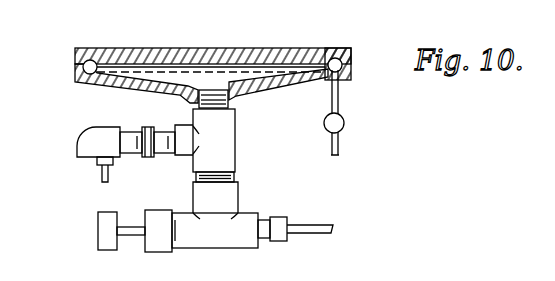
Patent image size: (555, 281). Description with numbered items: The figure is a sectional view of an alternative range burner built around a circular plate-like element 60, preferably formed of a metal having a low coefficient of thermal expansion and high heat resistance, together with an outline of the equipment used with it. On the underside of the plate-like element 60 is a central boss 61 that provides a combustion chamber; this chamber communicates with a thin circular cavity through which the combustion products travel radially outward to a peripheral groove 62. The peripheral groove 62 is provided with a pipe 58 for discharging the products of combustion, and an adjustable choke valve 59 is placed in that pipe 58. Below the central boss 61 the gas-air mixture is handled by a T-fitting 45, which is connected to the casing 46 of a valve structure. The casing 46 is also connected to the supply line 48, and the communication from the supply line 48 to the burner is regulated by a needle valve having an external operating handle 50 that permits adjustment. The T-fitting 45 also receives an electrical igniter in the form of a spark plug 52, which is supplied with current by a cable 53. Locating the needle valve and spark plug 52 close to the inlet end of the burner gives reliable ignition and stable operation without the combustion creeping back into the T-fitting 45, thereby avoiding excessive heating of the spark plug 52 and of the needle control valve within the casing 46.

The T-fitting 45 is at (236, 148).
The casing 46 is at (212, 248).
The supply line 48 is at (315, 235).
The operating handle 50 is at (98, 230).
The spark plug 52 is at (83, 128).
The cable 53 is at (102, 173).
The pipe 58 is at (343, 100).
The adjustable choke valve 59 is at (345, 122).
The circular plate-like element 60 is at (108, 48).
The central boss 61 is at (233, 90).
The peripheral groove 62 is at (82, 67).